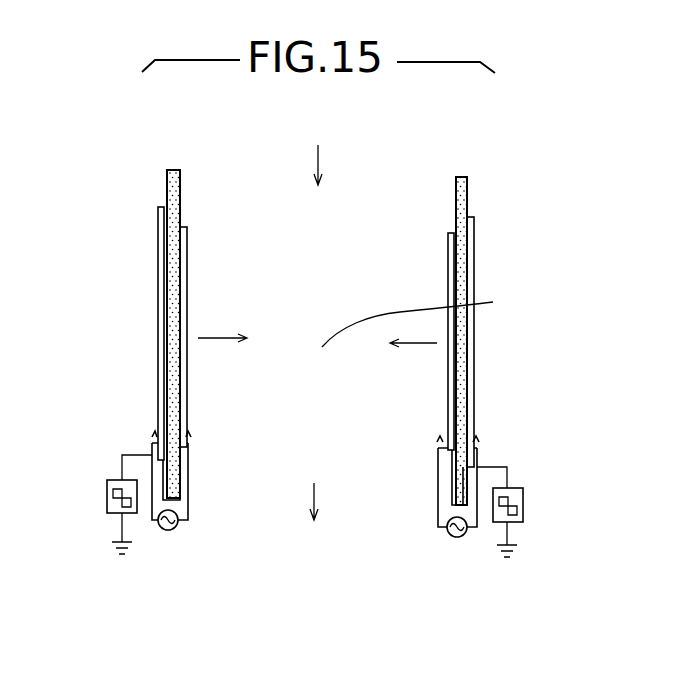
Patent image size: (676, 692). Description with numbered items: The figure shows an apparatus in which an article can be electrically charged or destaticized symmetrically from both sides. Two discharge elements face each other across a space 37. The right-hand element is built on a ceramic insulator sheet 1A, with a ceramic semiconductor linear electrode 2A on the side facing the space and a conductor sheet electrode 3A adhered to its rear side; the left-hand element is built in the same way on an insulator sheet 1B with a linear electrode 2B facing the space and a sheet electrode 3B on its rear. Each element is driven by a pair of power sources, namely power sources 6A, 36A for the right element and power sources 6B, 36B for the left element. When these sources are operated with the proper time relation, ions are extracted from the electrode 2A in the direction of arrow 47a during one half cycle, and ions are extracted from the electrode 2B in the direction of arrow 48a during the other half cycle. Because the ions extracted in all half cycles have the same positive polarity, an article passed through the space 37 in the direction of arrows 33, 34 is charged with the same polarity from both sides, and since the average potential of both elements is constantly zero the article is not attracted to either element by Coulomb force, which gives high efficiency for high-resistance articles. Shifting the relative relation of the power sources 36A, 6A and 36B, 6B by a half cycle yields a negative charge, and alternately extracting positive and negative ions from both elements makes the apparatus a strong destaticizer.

The ceramic insulator sheet 1A is at (462, 177).
The ceramic insulator sheet 1B is at (175, 170).
The electrode 2A is at (450, 233).
The electrode 2B is at (187, 228).
The sheet electrode 3A is at (474, 222).
The sheet electrode 3B is at (160, 207).
The power source 6A is at (448, 535).
The power source 6B is at (178, 523).
The arrow 33 is at (320, 155).
The arrow 34 is at (313, 495).
The power source 36A is at (523, 507).
The power source 36B is at (107, 490).
The space 37 is at (426, 318).
The arrow 47a is at (420, 343).
The arrow 48a is at (215, 338).